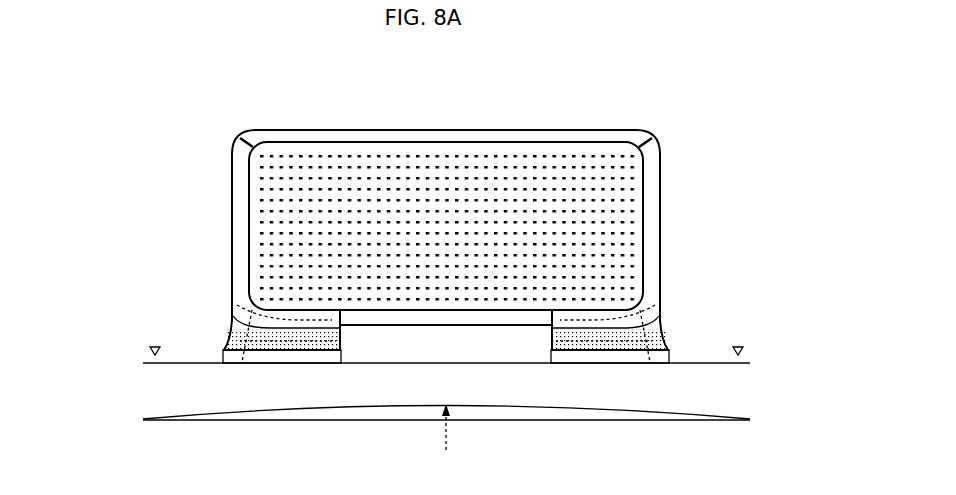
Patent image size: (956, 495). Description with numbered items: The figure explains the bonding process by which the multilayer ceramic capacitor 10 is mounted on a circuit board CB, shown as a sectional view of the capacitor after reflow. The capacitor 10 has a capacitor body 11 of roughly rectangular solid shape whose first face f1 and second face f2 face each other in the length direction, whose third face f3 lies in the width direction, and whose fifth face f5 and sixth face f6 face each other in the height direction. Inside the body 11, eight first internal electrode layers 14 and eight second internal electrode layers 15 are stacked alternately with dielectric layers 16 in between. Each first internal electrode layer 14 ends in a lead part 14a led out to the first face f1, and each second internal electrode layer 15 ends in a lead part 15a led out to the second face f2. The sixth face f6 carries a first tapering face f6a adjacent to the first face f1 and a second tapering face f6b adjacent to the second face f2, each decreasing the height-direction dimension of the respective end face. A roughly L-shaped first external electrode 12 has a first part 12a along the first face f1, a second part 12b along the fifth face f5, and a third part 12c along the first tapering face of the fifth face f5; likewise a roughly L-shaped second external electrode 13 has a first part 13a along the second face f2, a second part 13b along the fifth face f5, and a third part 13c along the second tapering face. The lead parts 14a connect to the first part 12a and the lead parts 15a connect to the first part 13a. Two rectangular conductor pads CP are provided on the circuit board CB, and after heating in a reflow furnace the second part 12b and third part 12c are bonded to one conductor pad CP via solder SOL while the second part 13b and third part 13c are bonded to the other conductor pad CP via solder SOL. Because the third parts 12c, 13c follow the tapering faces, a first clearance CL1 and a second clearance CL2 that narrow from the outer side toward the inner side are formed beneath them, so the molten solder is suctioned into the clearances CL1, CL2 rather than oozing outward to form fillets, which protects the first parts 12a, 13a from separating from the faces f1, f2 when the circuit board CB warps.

The multilayer ceramic capacitor 10 is at (314, 126).
The capacitor body 11 is at (347, 130).
The first external electrode 12 is at (264, 339).
The first part 12a is at (238, 268).
The second part 12b is at (308, 367).
The third part 12c is at (240, 318).
The second external electrode 13 is at (629, 337).
The first part 13a is at (652, 268).
The second part 13b is at (585, 365).
The third part 13c is at (657, 316).
The first internal electrode layer 14 is at (406, 130).
The lead part 14a is at (243, 160).
The second internal electrode layer 15 is at (497, 150).
The lead part 15a is at (662, 170).
The dielectric layer 16 is at (542, 170).
The first face f1 is at (251, 242).
The second face f2 is at (643, 238).
The third face f3 is at (250, 180).
The fifth face f5 is at (481, 327).
The sixth face f6 is at (453, 130).
The first tapering face f6a is at (275, 132).
The second tapering face f6b is at (618, 132).
The first clearance CL1 is at (222, 337).
The second clearance CL2 is at (665, 337).
The circuit board CB is at (178, 405).
The conductor pad CP is at (283, 357).
The solder SOL is at (247, 364).